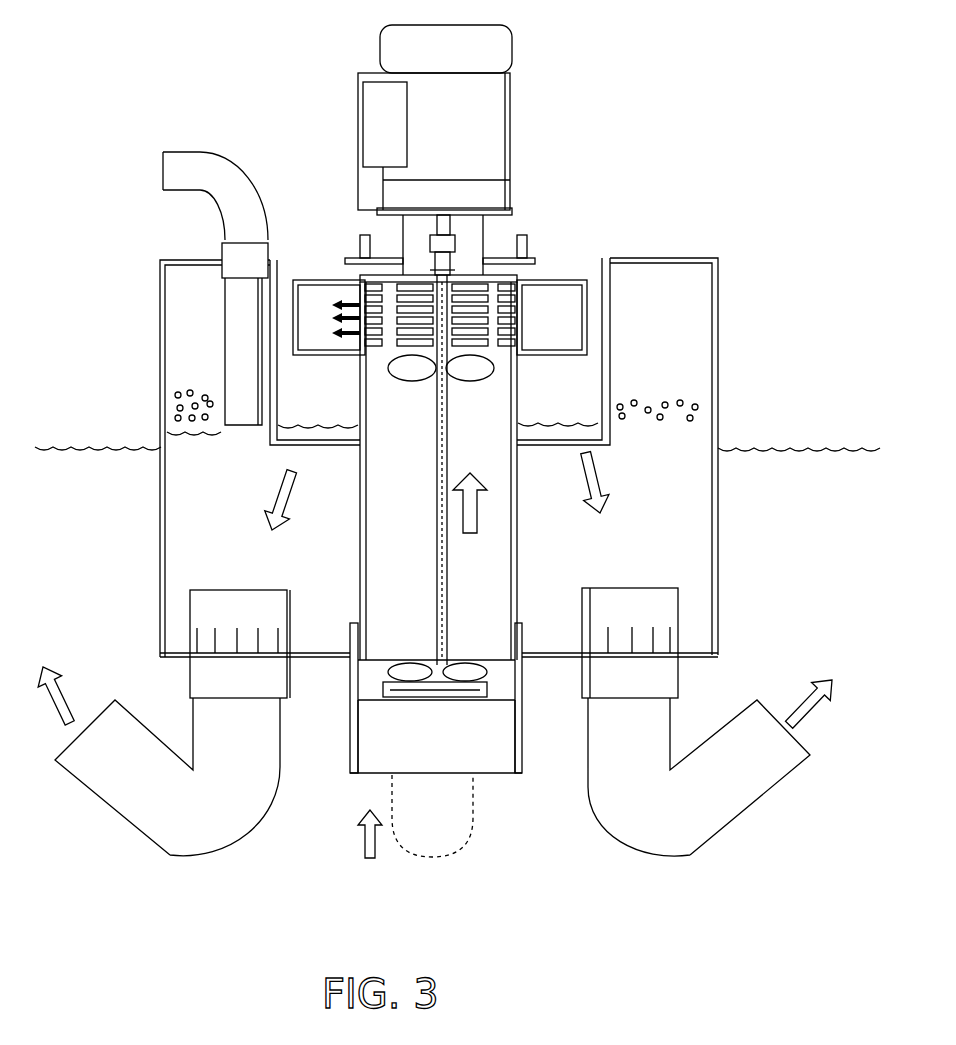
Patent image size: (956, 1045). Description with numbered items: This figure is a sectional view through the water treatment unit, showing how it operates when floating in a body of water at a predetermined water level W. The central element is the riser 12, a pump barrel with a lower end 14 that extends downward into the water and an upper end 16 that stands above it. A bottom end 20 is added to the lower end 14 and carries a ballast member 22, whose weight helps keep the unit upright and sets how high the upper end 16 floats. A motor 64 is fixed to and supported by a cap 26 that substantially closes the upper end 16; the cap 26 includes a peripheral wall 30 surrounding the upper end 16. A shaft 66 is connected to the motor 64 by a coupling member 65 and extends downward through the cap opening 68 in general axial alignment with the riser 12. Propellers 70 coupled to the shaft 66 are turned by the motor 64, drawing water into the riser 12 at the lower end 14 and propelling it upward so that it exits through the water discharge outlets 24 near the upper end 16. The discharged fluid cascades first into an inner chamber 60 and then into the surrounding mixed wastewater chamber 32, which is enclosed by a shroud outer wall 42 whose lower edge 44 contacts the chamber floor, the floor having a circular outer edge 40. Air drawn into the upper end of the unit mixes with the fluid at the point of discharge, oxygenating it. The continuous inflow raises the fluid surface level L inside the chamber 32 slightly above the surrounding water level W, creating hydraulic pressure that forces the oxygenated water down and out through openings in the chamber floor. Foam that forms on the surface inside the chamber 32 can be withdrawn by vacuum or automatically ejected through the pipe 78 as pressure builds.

The riser 12 is at (517, 527).
The lower end 14 is at (517, 698).
The upper end 16 is at (515, 327).
The bottom end 20 is at (495, 777).
The ballast member 22 is at (453, 828).
The water discharge outlets 24 is at (503, 262).
The cap 26 is at (563, 277).
The peripheral wall 30 is at (300, 307).
The mixed wastewater chamber 32 is at (700, 293).
The outer edge 40 is at (705, 667).
The outer wall 42 is at (158, 465).
The lower edge 44 is at (707, 650).
The inner chamber 60 is at (293, 393).
The motor 64 is at (500, 45).
The coupling member 65 is at (455, 240).
The shaft 66 is at (434, 507).
The cap opening 68 is at (432, 272).
The propellers 70 is at (473, 375).
The pipe 78 is at (237, 308).
The fluid surface level L is at (648, 422).
The water level W is at (799, 445).